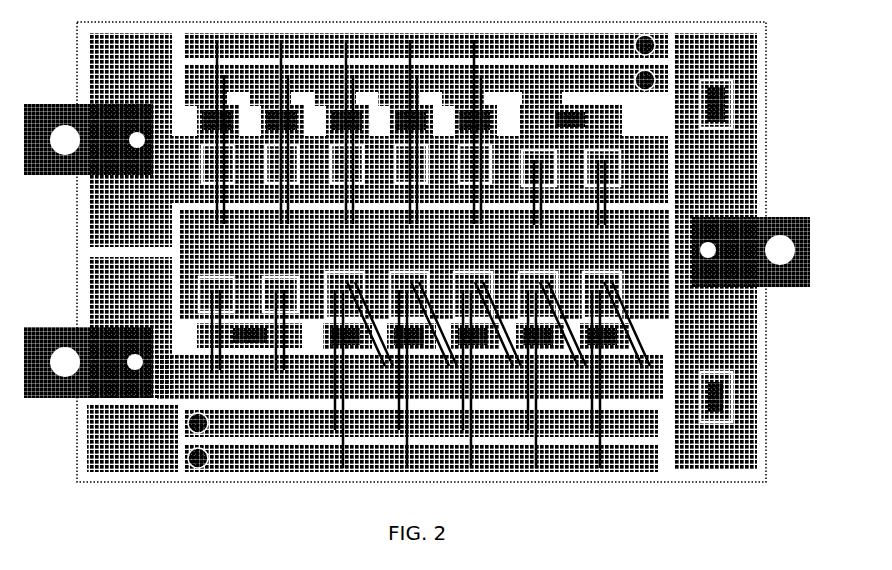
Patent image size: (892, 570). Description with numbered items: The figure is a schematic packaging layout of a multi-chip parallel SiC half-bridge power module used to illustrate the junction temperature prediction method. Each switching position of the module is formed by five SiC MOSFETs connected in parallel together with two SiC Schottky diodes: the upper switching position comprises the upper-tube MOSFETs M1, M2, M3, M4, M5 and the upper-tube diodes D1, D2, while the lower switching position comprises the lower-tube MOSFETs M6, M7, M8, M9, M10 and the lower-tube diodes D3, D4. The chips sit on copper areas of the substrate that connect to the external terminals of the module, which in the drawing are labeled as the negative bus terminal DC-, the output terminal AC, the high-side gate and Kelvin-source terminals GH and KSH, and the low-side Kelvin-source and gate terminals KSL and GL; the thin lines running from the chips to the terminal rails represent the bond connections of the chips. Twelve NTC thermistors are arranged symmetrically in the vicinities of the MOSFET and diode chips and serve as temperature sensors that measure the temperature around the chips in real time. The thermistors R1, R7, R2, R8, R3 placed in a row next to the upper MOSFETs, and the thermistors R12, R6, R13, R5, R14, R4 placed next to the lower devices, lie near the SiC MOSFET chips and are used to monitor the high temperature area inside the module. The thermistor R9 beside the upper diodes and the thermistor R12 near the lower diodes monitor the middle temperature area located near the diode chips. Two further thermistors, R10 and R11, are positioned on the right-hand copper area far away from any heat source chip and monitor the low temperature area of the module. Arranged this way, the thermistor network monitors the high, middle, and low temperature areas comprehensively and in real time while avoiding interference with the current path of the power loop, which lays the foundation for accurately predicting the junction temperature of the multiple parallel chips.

The negative DC terminal DC- is at (98, 327).
The AC output terminal AC is at (742, 251).
The high-side gate terminal GH is at (430, 45).
The high-side Kelvin source terminal KSH is at (434, 78).
The low-side Kelvin source terminal KSL is at (399, 423).
The low-side gate terminal GL is at (404, 458).
The NTC thermistor R1 is at (212, 113).
The NTC thermistor R2 is at (341, 113).
The NTC thermistor R3 is at (469, 113).
The NTC thermistor R4 is at (604, 350).
The NTC thermistor R5 is at (475, 350).
The NTC thermistor R6 is at (347, 350).
The NTC thermistor R7 is at (276, 113).
The NTC thermistor R8 is at (405, 113).
The NTC thermistor R9 is at (571, 113).
The NTC thermistor R10 is at (716, 118).
The NTC thermistor R11 is at (716, 413).
The NTC thermistor R12 is at (249, 350).
The NTC thermistor R13 is at (412, 350).
The NTC thermistor R14 is at (540, 350).
The SiC MOSFET M1 is at (202, 132).
The SiC MOSFET M2 is at (267, 132).
The SiC MOSFET M3 is at (332, 132).
The SiC MOSFET M4 is at (397, 132).
The SiC MOSFET M5 is at (461, 132).
The SiC MOSFET M6 is at (359, 359).
The SiC MOSFET M7 is at (423, 359).
The SiC MOSFET M8 is at (487, 359).
The SiC MOSFET M9 is at (552, 359).
The SiC MOSFET M10 is at (616, 359).
The SiC Schottky diode D1 is at (526, 187).
The SiC Schottky diode D2 is at (590, 187).
The SiC Schottky diode D3 is at (216, 313).
The SiC Schottky diode D4 is at (280, 313).